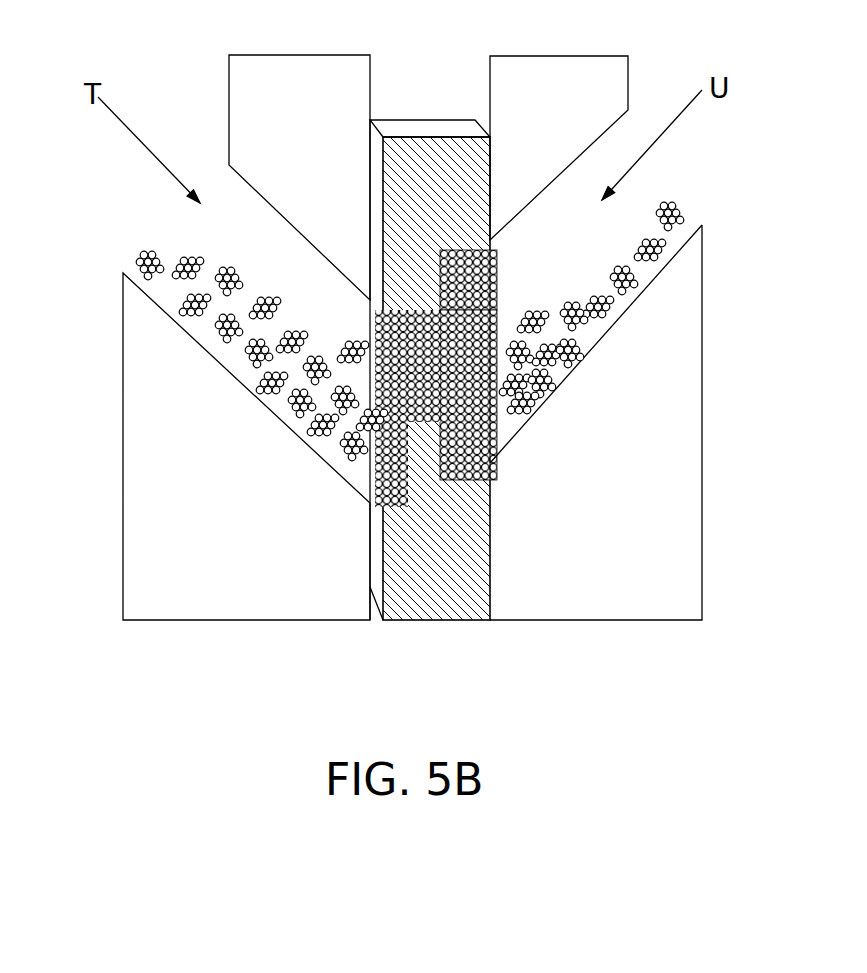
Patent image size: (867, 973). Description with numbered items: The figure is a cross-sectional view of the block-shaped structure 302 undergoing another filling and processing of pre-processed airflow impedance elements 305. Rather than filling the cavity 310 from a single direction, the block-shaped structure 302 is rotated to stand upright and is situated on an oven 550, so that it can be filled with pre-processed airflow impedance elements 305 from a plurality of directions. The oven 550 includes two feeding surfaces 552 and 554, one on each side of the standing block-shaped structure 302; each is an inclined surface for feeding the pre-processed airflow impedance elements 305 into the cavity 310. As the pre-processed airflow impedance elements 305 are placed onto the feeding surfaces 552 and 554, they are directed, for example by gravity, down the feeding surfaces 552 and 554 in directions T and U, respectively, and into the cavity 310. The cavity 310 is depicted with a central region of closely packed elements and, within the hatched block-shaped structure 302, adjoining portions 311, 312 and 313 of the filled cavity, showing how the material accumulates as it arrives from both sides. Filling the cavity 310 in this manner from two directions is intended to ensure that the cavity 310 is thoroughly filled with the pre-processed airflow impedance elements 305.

The block-shaped structure 302 is at (455, 603).
The pre-processed airflow impedance elements 305 is at (133, 263).
The cavity 310 is at (498, 330).
The first portion of heating element 311 is at (375, 310).
The second portion of heating element 312 is at (408, 310).
The third portion of heating element 313 is at (498, 258).
The oven 550 is at (670, 578).
The feeding surface 552 is at (253, 393).
The feeding surface 554 is at (572, 370).